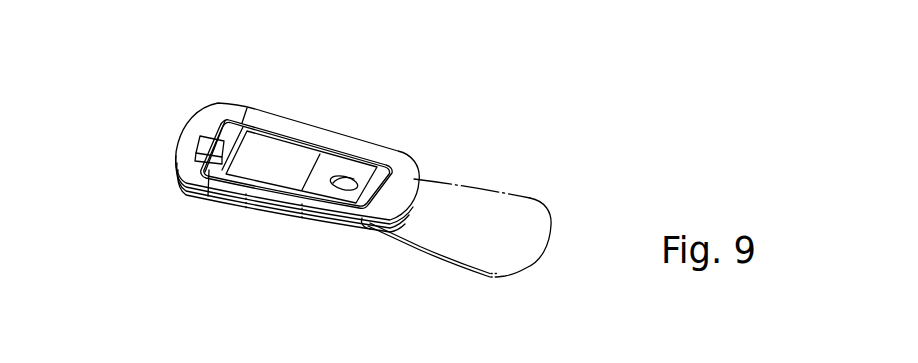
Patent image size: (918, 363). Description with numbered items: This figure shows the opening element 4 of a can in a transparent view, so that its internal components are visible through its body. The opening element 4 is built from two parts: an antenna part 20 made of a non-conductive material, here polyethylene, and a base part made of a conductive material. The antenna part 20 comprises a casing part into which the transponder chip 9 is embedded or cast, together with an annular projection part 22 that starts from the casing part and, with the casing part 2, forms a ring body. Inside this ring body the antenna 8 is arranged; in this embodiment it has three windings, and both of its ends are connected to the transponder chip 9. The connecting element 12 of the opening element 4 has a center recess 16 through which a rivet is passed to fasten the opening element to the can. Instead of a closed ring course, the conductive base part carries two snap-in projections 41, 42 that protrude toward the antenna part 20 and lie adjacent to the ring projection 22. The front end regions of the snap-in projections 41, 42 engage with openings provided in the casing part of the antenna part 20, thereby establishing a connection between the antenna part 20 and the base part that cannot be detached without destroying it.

The casing part 2 is at (495, 228).
The opening element 4 is at (258, 90).
The antenna 8 is at (222, 128).
The transponder chip 9 is at (208, 148).
The connecting element 12 is at (318, 167).
The center recess 16 is at (350, 179).
The antenna part 20 is at (188, 165).
The annular projection part 22 is at (313, 220).
The snap-in projection 41 is at (294, 126).
The snap-in projection 42 is at (228, 190).